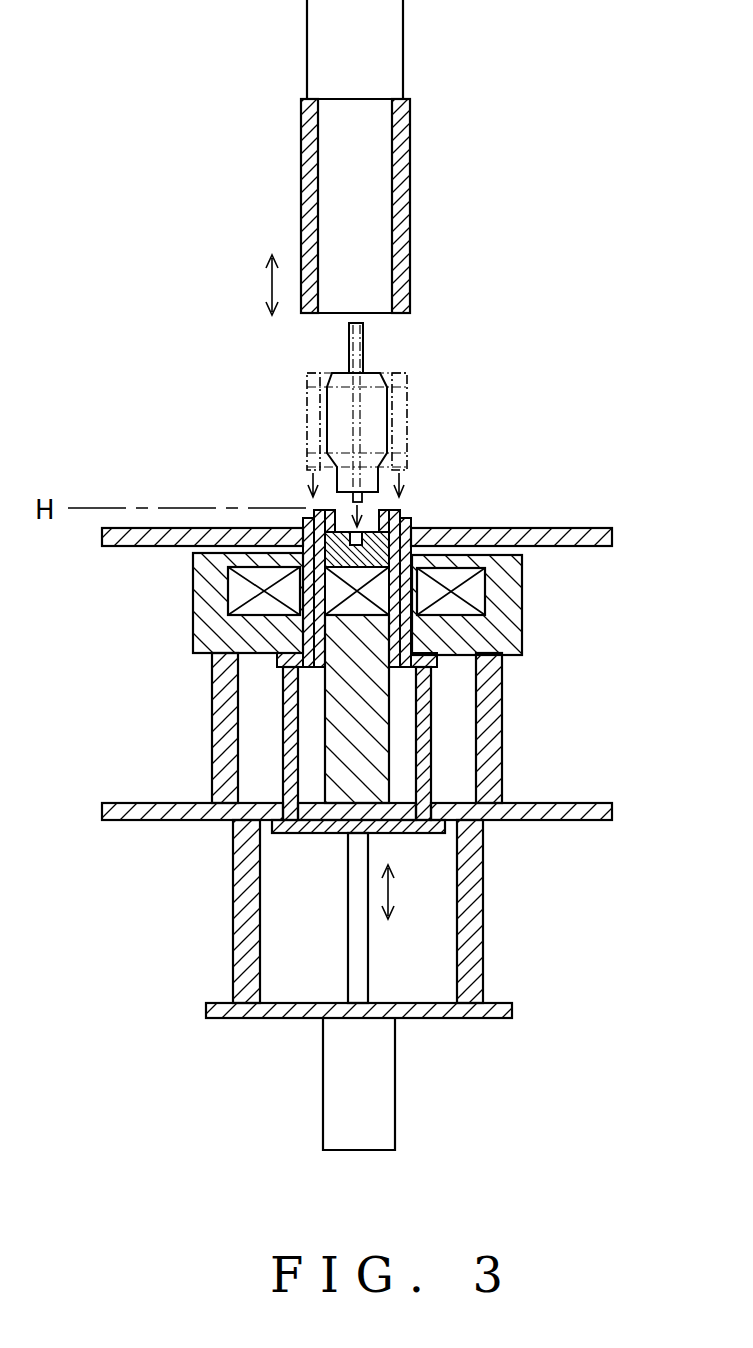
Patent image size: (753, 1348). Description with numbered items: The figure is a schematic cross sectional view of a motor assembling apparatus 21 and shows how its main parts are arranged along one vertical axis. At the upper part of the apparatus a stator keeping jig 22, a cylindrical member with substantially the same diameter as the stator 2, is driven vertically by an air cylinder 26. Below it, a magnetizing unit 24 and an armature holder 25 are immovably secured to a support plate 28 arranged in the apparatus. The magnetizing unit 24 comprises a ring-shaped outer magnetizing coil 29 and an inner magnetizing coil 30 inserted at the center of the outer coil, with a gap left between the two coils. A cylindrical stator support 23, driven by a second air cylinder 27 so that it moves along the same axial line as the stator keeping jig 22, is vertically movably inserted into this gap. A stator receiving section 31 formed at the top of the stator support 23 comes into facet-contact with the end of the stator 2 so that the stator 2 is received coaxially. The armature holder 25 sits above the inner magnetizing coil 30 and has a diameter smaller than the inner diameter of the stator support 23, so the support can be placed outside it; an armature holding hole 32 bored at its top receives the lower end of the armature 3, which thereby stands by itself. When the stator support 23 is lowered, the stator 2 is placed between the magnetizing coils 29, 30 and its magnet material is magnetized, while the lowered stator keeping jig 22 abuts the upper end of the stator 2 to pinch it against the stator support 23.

The stator 2 is at (398, 383).
The armature 3 is at (345, 415).
The motor assembling apparatus 21 is at (570, 396).
The stator keeping jig 22 is at (405, 198).
The stator support 23 is at (412, 527).
The magnetizing unit 24 is at (537, 609).
The armature holder 25 is at (303, 528).
The air cylinder 26 is at (387, 44).
The air cylinder 27 is at (383, 1097).
The support plate 28 is at (557, 812).
The outer magnetizing coil 29 is at (237, 598).
The inner magnetizing coil 30 is at (355, 606).
The stator receiving section 31 is at (310, 514).
The armature holding hole 32 is at (405, 520).